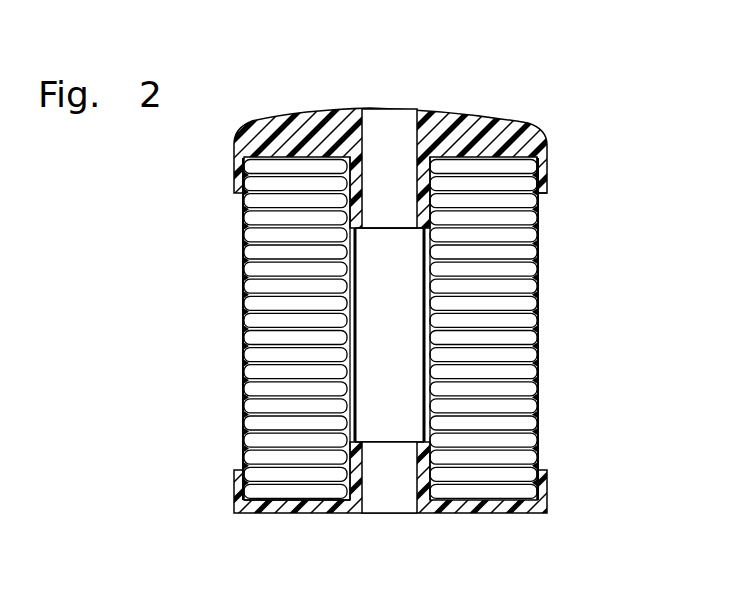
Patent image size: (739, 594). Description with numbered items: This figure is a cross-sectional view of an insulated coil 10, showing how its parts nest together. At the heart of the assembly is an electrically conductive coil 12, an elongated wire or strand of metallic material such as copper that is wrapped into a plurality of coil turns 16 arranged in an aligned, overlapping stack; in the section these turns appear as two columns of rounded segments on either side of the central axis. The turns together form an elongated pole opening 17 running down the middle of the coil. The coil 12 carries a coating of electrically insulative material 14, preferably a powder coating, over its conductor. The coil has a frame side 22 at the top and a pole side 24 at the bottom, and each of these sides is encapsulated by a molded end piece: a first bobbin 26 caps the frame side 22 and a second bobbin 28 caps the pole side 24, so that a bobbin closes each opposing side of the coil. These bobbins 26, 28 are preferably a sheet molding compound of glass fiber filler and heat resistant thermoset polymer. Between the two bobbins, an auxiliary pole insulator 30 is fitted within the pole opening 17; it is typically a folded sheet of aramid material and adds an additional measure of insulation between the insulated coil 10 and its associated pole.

The insulated coil 10 is at (560, 78).
The electrically conductive coil 12 is at (407, 328).
The coating of electrically insulative material 14 is at (242, 347).
The coil turns 16 is at (258, 268).
The pole opening 17 is at (388, 146).
The frame side 22 is at (447, 99).
The pole side 24 is at (400, 327).
The first end piece or bobbin 26 is at (505, 142).
The second end piece or bobbin 28 is at (275, 506).
The auxiliary pole insulator 30 is at (355, 342).